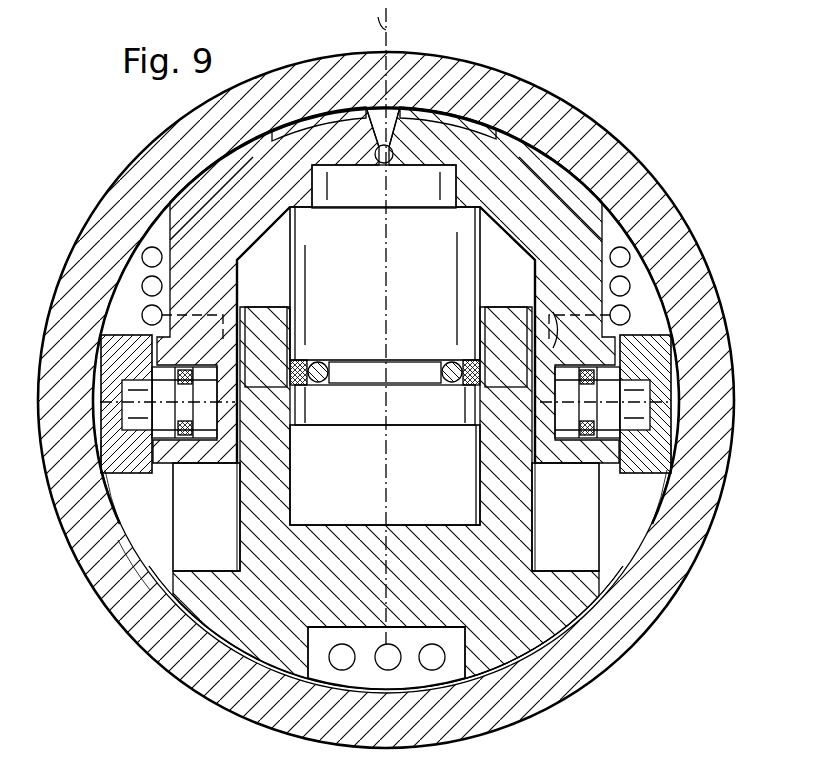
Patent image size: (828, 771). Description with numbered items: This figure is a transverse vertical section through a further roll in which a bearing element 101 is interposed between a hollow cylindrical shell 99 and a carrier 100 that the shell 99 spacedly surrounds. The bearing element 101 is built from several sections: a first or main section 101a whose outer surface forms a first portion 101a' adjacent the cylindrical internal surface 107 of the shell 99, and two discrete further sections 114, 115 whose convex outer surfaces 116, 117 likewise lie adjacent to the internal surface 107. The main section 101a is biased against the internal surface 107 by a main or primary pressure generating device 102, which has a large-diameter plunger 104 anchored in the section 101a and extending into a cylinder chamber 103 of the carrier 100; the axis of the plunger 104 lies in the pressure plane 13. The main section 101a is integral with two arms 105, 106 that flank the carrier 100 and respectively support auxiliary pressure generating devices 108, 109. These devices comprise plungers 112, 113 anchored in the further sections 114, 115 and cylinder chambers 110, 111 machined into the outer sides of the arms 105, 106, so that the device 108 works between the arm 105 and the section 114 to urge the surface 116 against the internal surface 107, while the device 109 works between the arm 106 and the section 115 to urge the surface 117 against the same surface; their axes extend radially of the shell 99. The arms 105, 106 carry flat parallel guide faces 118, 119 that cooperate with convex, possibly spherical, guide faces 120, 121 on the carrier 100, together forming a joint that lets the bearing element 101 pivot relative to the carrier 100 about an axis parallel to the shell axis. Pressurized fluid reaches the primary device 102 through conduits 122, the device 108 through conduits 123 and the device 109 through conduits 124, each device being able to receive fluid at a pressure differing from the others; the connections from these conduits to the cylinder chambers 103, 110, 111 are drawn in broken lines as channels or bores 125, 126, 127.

The pressure plane 13 is at (394, 16).
The hollow cylindrical shell 99 is at (624, 163).
The carrier 100 is at (557, 603).
The bearing element 101 is at (575, 150).
The main section of the bearing element 101a is at (464, 92).
The first portion of the outer surface of the bearing element 101a' is at (299, 91).
The main pressure generating device 102 is at (453, 526).
The cylinder chamber 103 is at (397, 482).
The large-diameter plunger 104 is at (447, 297).
The arm 105 is at (193, 233).
The arm 106 is at (625, 235).
The cylindrical internal surface 107 is at (133, 529).
The auxiliary pressure generating device 108 is at (113, 486).
The auxiliary pressure generating device 109 is at (634, 473).
The cylinder chamber 110 is at (213, 426).
The cylinder chamber 111 is at (561, 429).
The plunger 112 is at (147, 370).
The plunger 113 is at (667, 335).
The further section of the bearing element 114 is at (110, 456).
The further section of the bearing element 115 is at (657, 456).
The convex outer surface 116 is at (97, 377).
The convex outer surface 117 is at (672, 345).
The flat parallel guide face 118 is at (235, 287).
The flat parallel guide face 119 is at (531, 283).
The convex guide face 120 is at (240, 426).
The convex guide face 121 is at (499, 436).
The conduits 122 is at (373, 661).
The conduits 123 is at (145, 310).
The conduits 124 is at (629, 278).
The connection 125 is at (387, 573).
The connection 126 is at (227, 341).
The connection 127 is at (552, 312).